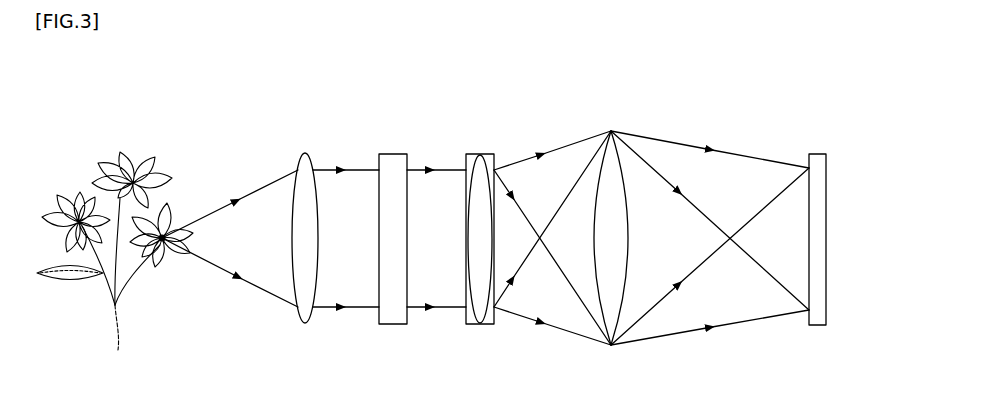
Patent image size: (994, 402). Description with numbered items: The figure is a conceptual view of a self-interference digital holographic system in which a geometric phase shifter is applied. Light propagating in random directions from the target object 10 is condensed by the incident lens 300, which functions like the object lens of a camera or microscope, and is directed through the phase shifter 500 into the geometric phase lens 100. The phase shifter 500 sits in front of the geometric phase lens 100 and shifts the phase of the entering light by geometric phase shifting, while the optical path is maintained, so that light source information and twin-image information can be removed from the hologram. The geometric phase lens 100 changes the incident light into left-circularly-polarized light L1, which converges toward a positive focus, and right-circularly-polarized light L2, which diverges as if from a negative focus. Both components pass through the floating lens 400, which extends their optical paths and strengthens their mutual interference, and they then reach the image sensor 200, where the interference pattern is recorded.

The target object 10 is at (115, 263).
The incident lens 300 is at (305, 153).
The phase shifter 500 is at (391, 154).
The geometric phase lens 100 is at (478, 154).
The right-circularly-polarized light L2 is at (527, 150).
The left-circularly-polarized light L1 is at (582, 170).
The floating lens 400 is at (611, 131).
The image sensor 200 is at (815, 154).